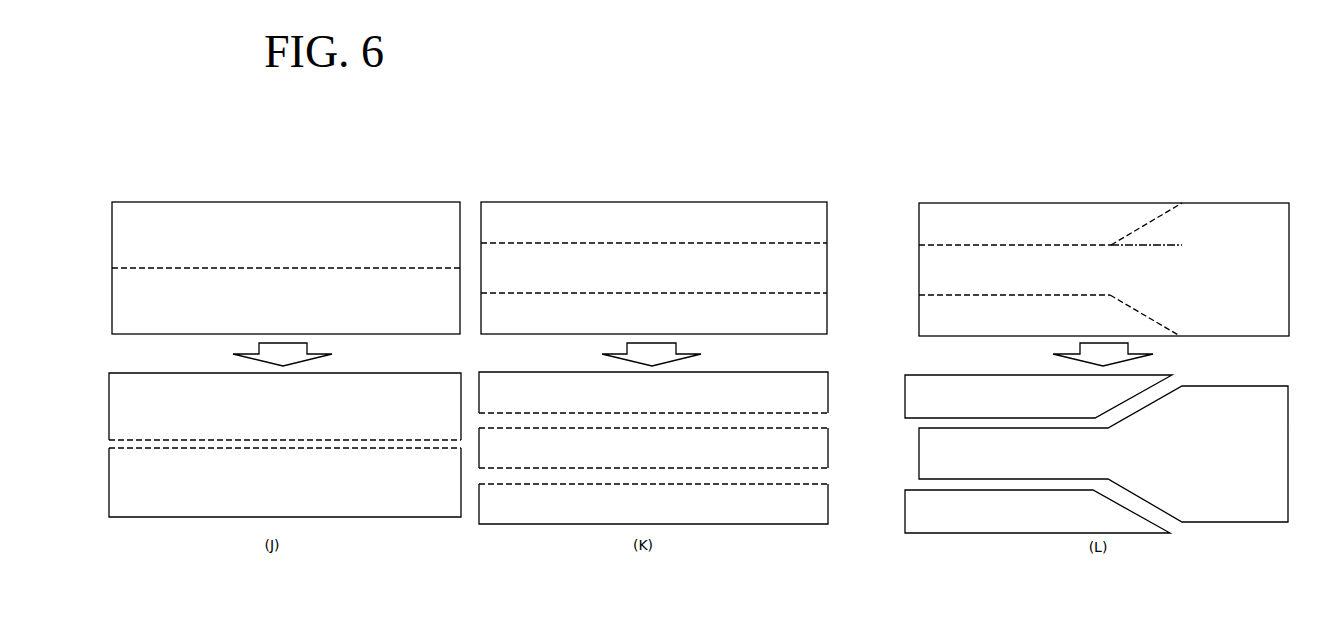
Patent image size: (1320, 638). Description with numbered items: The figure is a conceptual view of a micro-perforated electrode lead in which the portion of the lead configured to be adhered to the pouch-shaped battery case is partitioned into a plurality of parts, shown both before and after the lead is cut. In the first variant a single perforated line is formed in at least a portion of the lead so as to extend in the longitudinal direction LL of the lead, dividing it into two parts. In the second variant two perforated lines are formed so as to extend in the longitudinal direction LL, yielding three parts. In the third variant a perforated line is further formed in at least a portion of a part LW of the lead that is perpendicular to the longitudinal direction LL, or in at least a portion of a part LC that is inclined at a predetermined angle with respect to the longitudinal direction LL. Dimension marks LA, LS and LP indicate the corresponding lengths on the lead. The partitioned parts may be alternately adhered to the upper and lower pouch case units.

The longitudinal direction of the electrode lead LL is at (1289, 203).
The length of active portion LA is at (1182, 203).
The length of straight portion LS is at (1111, 245).
The part of the electrode lead perpendicular to the longitudinal direction LW is at (919, 203).
The width of cut-out portion LP is at (919, 245).
The part of the electrode lead inclined with respect to the longitudinal direction LC is at (1168, 355).